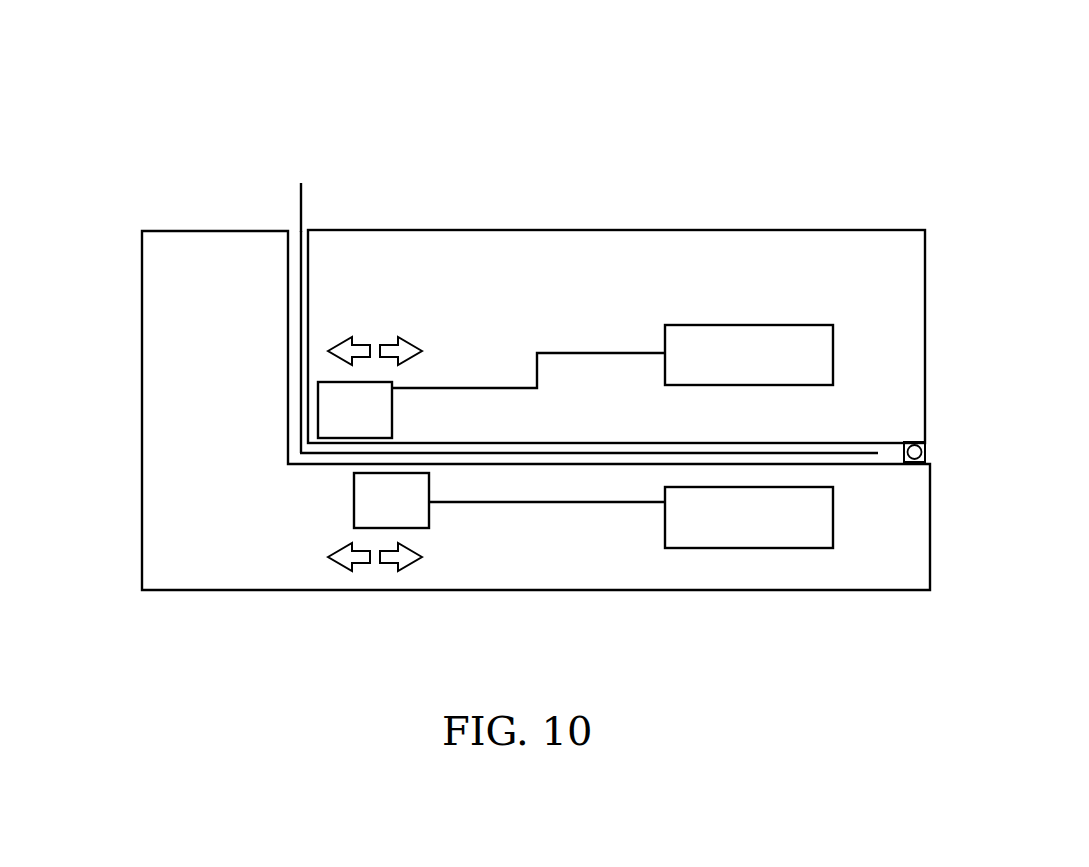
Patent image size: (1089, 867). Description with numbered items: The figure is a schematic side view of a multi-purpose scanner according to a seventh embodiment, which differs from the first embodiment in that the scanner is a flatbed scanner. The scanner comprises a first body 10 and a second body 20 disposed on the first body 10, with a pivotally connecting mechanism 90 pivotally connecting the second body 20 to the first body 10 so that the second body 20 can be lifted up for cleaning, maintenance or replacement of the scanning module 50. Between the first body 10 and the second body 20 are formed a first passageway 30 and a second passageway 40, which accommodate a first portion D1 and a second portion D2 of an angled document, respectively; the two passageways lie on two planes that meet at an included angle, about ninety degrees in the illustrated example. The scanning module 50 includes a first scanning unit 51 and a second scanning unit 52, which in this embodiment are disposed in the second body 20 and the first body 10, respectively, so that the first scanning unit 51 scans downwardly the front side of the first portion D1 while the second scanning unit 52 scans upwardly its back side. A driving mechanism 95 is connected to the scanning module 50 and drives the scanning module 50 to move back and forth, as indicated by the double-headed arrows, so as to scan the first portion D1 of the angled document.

The first body 10 is at (155, 352).
The second body 20 is at (874, 242).
The first passageway 30 is at (582, 459).
The second passageway 40 is at (293, 240).
The scanning module 50 is at (632, 296).
The first scanning unit 51 is at (327, 412).
The second scanning unit 52 is at (367, 498).
The pivotally connecting mechanism 90 is at (923, 450).
The driving mechanism 95 is at (749, 342).
The first portion D1 is at (550, 450).
The second portion D2 is at (302, 202).